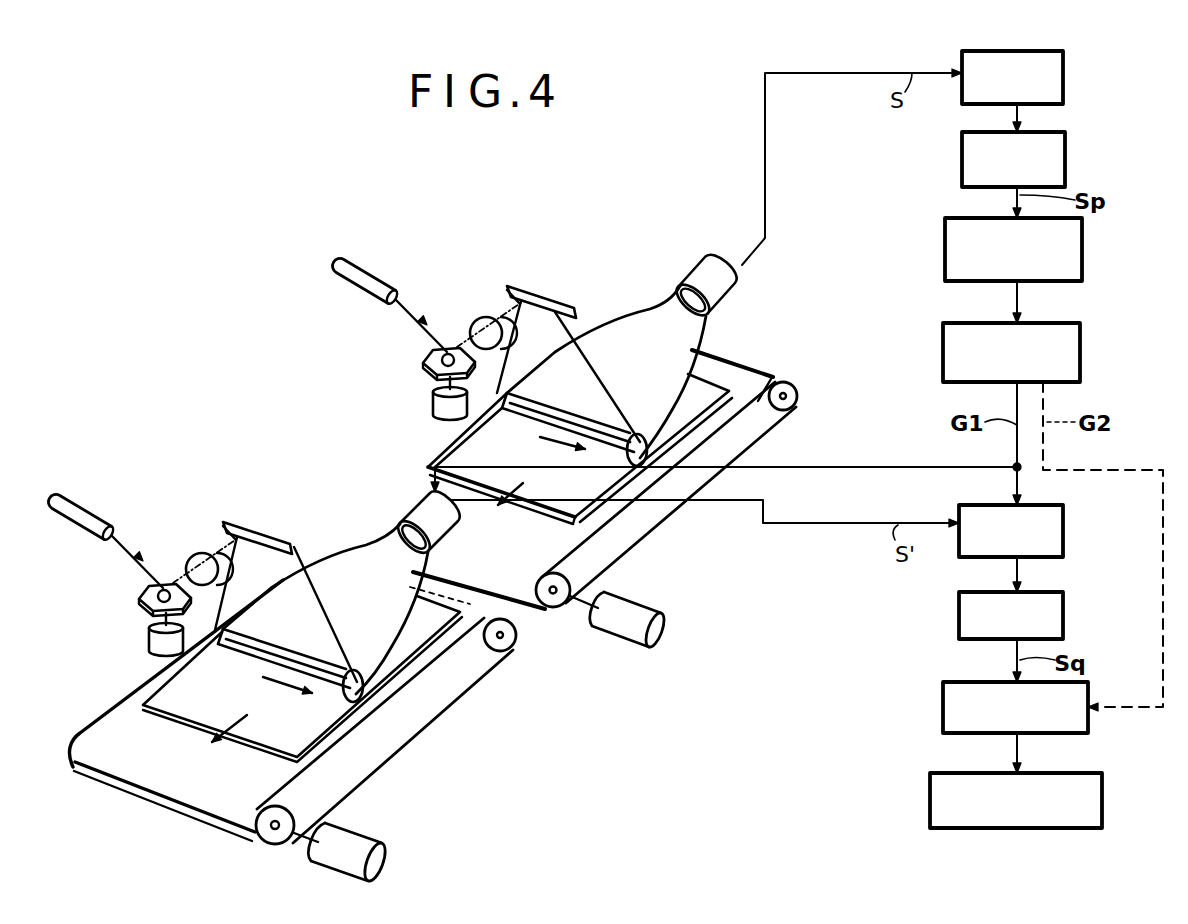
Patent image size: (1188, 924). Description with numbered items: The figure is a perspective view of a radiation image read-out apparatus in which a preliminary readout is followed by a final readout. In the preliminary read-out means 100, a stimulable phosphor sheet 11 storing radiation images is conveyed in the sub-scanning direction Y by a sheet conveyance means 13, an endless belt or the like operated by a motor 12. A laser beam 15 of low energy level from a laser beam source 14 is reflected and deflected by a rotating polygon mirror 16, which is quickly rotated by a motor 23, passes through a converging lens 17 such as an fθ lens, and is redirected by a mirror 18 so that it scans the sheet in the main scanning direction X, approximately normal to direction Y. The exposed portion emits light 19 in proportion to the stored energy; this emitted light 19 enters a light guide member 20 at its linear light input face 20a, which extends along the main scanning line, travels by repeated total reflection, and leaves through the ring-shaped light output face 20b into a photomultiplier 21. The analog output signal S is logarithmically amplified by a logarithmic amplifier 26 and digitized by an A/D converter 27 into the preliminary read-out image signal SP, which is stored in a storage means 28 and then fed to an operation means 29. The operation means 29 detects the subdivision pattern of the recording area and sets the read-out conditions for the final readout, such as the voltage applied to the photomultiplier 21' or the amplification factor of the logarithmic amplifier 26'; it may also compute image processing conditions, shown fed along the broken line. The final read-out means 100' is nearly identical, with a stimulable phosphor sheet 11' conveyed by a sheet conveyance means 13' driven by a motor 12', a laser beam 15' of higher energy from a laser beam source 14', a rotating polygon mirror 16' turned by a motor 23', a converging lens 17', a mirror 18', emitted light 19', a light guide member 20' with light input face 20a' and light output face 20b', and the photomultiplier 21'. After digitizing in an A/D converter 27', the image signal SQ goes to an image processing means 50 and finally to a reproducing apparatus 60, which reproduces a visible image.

The preliminary read-out means 100 is at (565, 429).
The laser beam source 14 is at (370, 270).
The laser beam 15 is at (421, 312).
The rotating polygon mirror 16 is at (419, 363).
The converging lens 17 is at (486, 306).
The mirror 18 is at (568, 350).
The emitted light 19 is at (506, 464).
The light guide member 20 is at (606, 359).
The linear light input face 20a is at (637, 447).
The ring-shaped light output face 20b is at (726, 316).
The photomultiplier 21 is at (815, 195).
The motor 23 is at (419, 401).
The stimulable phosphor sheet 11 is at (600, 447).
The motor 12 is at (634, 606).
The sheet conveyance means 13 is at (666, 494).
The final read-out means 100' is at (300, 659).
The laser beam source 14' is at (93, 505).
The laser beam 15' is at (144, 548).
The rotating polygon mirror 16' is at (133, 595).
The converging lens 17' is at (205, 535).
The mirror 18' is at (286, 585).
The emitted light 19' is at (302, 687).
The light guide member 20' is at (325, 586).
The linear light input face 20a' is at (358, 687).
The ring-shaped light output face 20b' is at (465, 540).
The photomultiplier 21' is at (410, 498).
The motor 23' is at (132, 639).
The stimulable phosphor sheet 11' is at (307, 706).
The motor 12' is at (355, 845).
The sheet conveyance means 13' is at (386, 731).
The logarithmic amplifier 26 is at (1055, 77).
The A/D converter 27 is at (1059, 159).
The storage means 28 is at (1083, 248).
The operation means 29 is at (1081, 350).
The logarithmic amplifier 26' is at (1056, 532).
The A/D converter 27' is at (1055, 615).
The image processing means 50 is at (1089, 727).
The reproducing apparatus 60 is at (1103, 805).